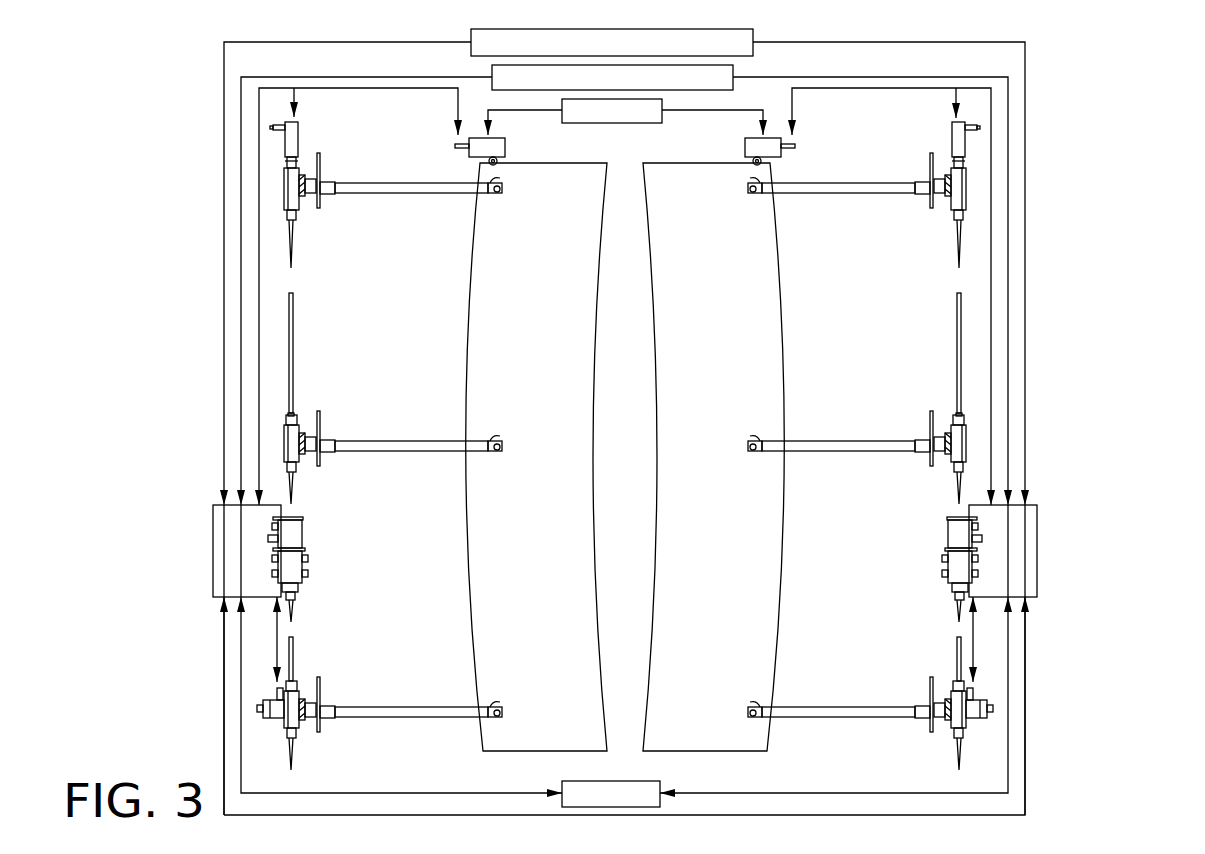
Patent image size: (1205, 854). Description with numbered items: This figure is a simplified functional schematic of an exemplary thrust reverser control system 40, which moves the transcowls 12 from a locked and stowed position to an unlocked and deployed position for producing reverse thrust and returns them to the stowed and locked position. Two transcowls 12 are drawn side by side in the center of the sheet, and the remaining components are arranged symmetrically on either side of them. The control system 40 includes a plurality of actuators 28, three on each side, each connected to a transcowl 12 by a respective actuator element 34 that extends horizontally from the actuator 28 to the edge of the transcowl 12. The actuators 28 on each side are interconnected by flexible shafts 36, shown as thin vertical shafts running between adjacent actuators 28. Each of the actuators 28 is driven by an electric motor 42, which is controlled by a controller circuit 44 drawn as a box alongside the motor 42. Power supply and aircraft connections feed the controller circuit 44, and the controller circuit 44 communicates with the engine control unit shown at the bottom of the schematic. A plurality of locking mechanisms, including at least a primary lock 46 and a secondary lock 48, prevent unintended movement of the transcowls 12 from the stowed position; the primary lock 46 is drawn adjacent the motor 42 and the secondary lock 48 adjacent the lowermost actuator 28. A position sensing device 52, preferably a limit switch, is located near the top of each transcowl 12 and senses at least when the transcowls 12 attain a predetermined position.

The control system 40 is at (1096, 70).
The transcowl 12 is at (554, 262).
The actuator 28 is at (300, 210).
The actuator element 34 is at (390, 192).
The flexible shaft 36 is at (294, 335).
The electric motor 42 is at (308, 572).
The controller circuit 44 is at (253, 560).
The primary lock 46 is at (304, 527).
The secondary lock 48 is at (262, 720).
The position sensing device 52 is at (505, 148).